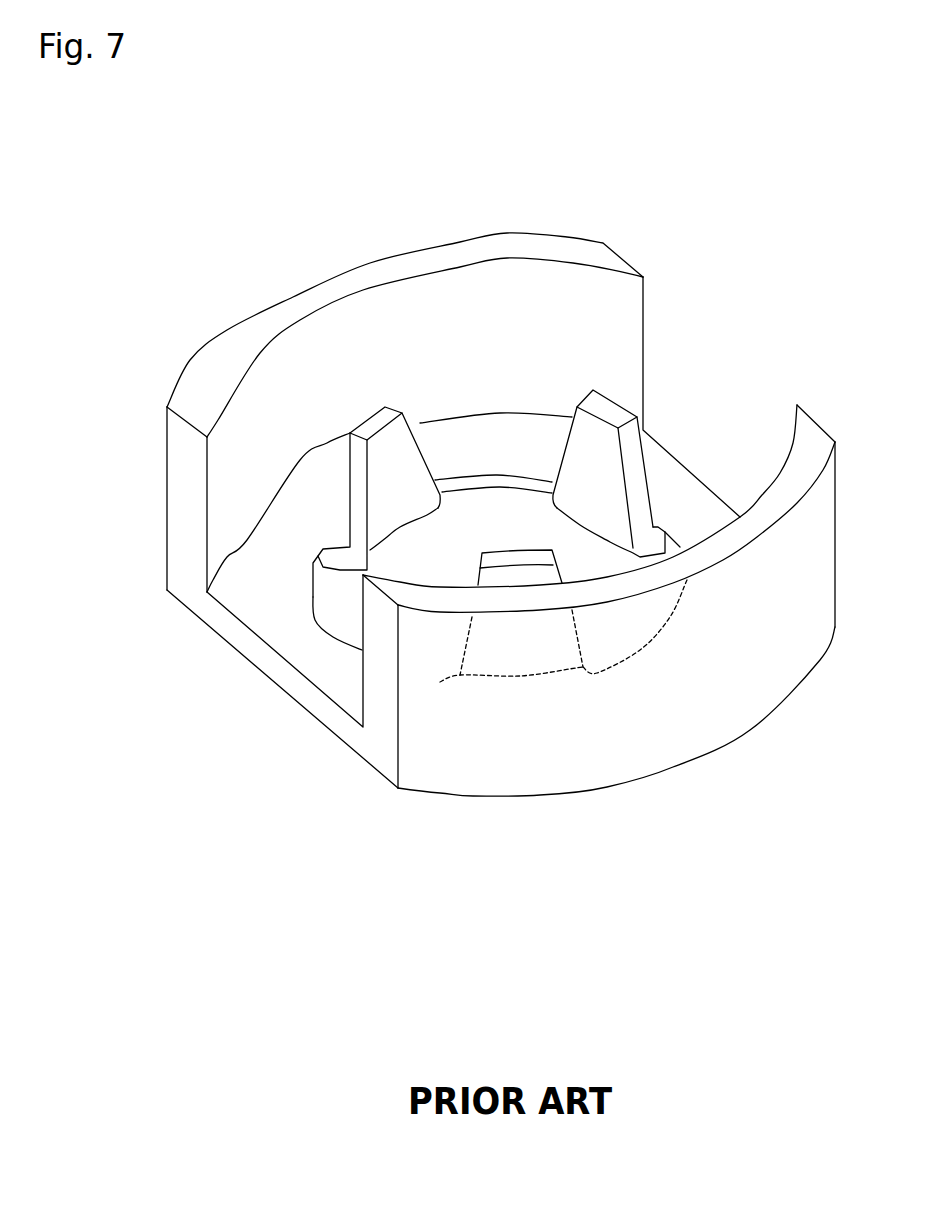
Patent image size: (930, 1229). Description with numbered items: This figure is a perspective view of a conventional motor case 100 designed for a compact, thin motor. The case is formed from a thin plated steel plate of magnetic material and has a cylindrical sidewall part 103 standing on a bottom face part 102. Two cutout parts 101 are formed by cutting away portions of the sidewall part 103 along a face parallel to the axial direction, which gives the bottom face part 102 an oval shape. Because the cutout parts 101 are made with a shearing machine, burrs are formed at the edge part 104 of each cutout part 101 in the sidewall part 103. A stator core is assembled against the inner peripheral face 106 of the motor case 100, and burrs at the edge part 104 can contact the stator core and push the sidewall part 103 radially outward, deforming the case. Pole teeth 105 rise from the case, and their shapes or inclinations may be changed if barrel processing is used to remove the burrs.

The motor case 100 is at (721, 104).
The cutout parts 101 is at (712, 408).
The bottom face part 102 is at (322, 658).
The sidewall part 103 is at (418, 296).
The edge part 104 is at (646, 295).
The pole teeth 105 is at (600, 406).
The inner peripheral face 106 is at (603, 358).